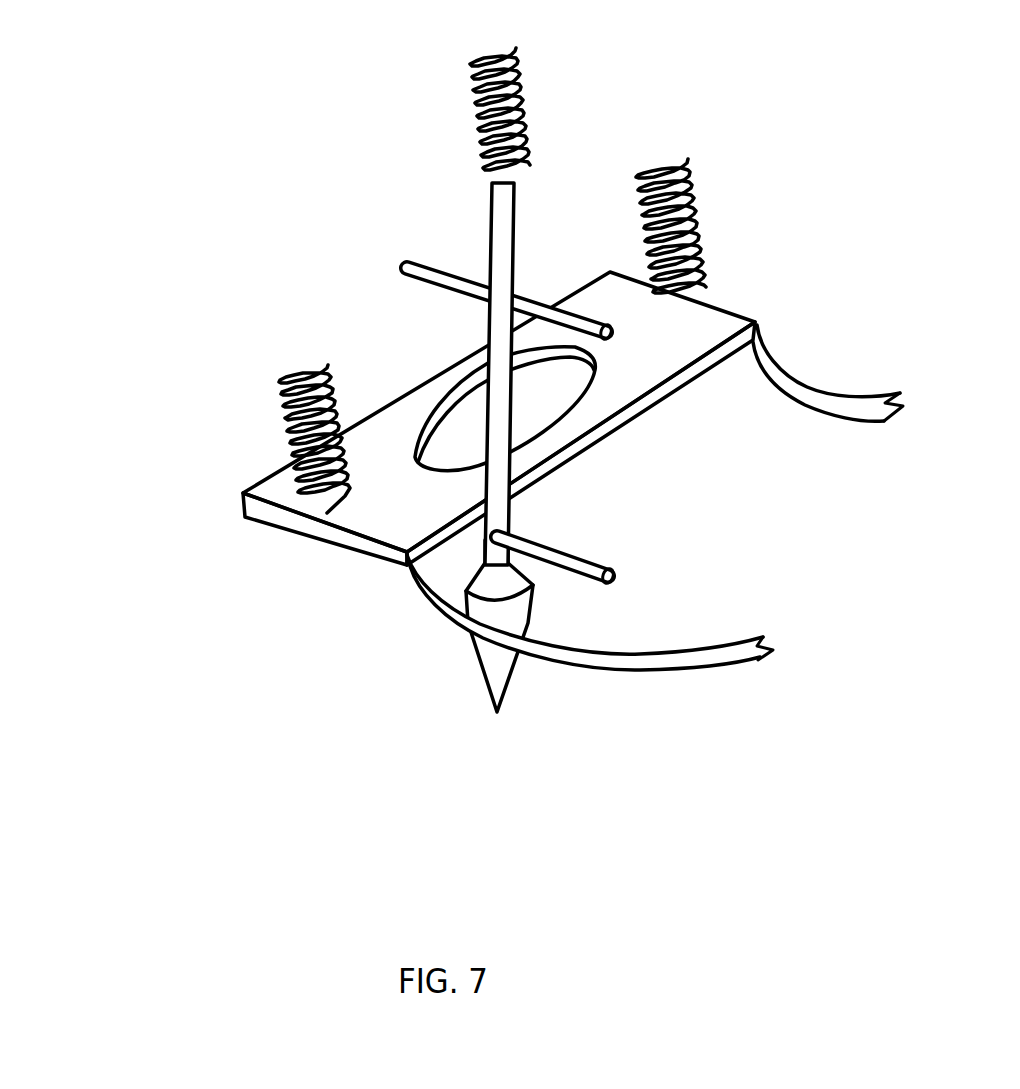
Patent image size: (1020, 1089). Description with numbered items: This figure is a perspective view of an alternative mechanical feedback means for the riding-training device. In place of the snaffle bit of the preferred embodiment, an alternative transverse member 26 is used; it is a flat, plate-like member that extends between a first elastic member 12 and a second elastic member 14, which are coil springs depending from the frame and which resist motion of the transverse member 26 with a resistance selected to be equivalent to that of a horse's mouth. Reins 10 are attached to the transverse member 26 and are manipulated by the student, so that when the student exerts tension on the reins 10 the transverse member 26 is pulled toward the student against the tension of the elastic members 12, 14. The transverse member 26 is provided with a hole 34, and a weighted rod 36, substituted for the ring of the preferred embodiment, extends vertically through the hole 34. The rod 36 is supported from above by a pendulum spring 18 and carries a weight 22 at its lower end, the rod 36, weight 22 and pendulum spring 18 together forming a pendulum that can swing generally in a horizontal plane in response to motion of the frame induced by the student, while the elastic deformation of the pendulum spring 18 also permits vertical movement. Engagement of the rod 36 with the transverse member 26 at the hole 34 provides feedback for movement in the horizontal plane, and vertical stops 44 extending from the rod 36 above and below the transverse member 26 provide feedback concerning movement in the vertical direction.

The reins 10 is at (833, 405).
The first elastic member 12 is at (690, 207).
The second elastic member 14 is at (283, 404).
The pendulum spring 18 is at (487, 112).
The weight 22 is at (473, 660).
The alternative transverse member 26 is at (728, 307).
The hole 34 is at (598, 348).
The weighted rod 36 is at (488, 193).
The vertical stops 44 is at (527, 343).